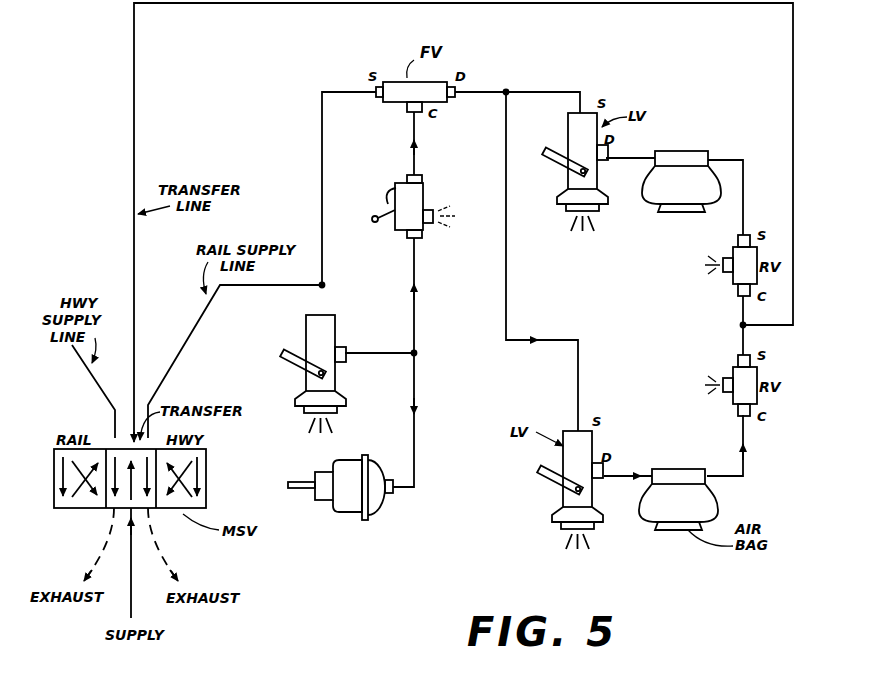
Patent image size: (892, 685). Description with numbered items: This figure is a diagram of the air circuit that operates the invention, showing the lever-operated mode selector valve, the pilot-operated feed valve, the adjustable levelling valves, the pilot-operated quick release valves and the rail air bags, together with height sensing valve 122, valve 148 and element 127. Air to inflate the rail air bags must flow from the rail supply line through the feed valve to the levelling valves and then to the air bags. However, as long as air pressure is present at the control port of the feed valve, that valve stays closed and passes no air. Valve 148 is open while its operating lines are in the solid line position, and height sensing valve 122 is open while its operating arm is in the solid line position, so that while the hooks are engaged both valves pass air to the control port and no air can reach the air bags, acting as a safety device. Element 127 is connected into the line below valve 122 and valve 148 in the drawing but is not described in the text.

The height sensing valve 122 is at (302, 343).
The actuator cylinder 127 is at (384, 512).
The valve 148 is at (430, 201).